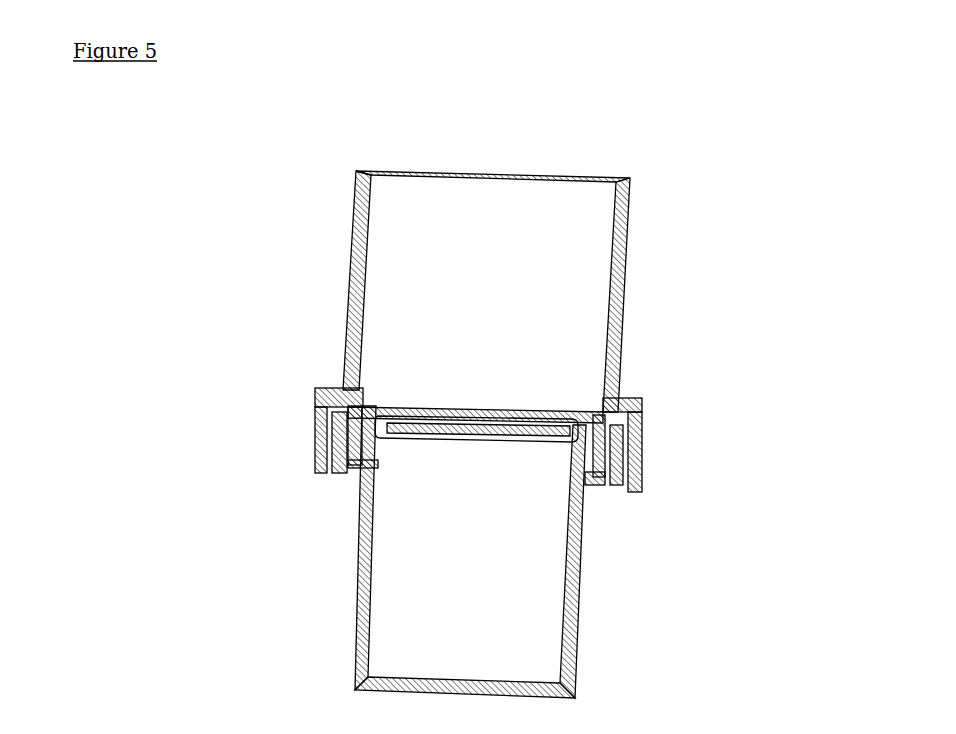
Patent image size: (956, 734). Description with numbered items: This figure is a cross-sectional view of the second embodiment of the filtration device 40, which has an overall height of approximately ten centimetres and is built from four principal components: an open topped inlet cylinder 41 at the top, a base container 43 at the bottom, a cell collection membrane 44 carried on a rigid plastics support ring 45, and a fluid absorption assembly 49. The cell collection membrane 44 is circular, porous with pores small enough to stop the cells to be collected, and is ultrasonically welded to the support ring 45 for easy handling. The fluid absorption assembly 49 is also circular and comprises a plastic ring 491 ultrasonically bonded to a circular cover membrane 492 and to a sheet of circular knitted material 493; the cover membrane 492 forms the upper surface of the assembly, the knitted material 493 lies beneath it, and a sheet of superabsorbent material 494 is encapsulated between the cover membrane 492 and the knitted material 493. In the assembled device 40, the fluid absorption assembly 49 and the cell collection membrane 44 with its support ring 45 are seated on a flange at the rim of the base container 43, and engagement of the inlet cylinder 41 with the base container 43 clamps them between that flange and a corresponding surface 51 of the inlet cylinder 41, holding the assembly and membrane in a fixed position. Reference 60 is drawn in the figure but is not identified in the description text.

The filtration device 40 is at (266, 295).
The inlet cylinder 41 is at (632, 232).
The base container 43 is at (578, 676).
The cell collection membrane 44 is at (622, 368).
The support ring 45 is at (640, 397).
The fluid absorption assembly 49 is at (672, 478).
The plastic ring 491 is at (318, 432).
The cover membrane 492 is at (385, 402).
The circular knitted material 493 is at (420, 443).
The superabsorbent material 494 is at (543, 447).
The corresponding surface 51 is at (313, 403).
The pad 60 is at (367, 470).